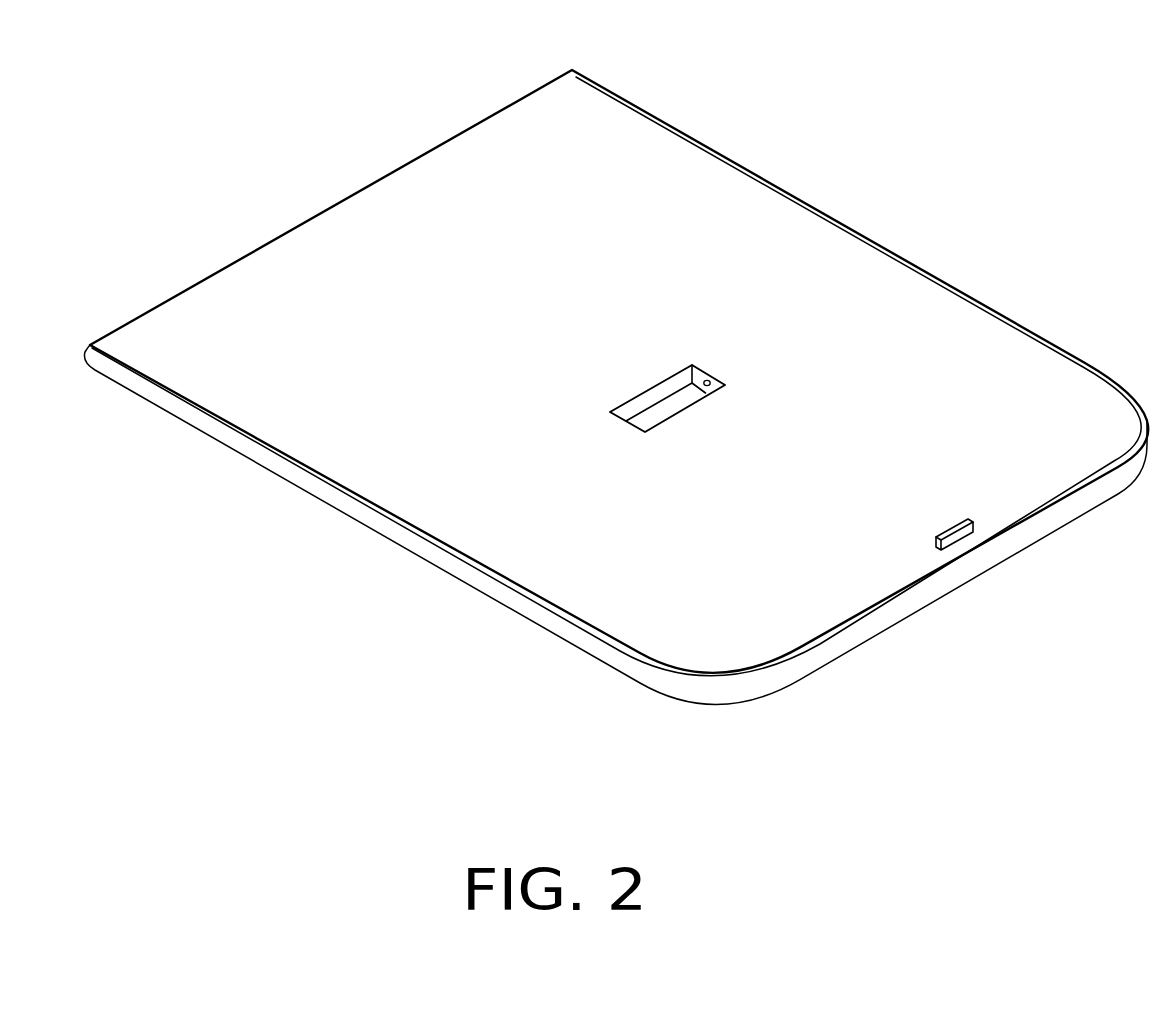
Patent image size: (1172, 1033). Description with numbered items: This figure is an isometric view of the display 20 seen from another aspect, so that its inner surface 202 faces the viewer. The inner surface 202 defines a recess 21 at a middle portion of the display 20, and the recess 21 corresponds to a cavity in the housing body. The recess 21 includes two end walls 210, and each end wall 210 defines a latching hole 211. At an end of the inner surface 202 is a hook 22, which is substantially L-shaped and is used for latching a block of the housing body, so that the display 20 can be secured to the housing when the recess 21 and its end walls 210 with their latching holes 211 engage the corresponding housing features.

The display 20 is at (185, 108).
The inner surface 202 is at (657, 185).
The recess 21 is at (666, 404).
The end wall 210 is at (700, 370).
The latching hole 211 is at (712, 375).
The hook 22 is at (957, 533).